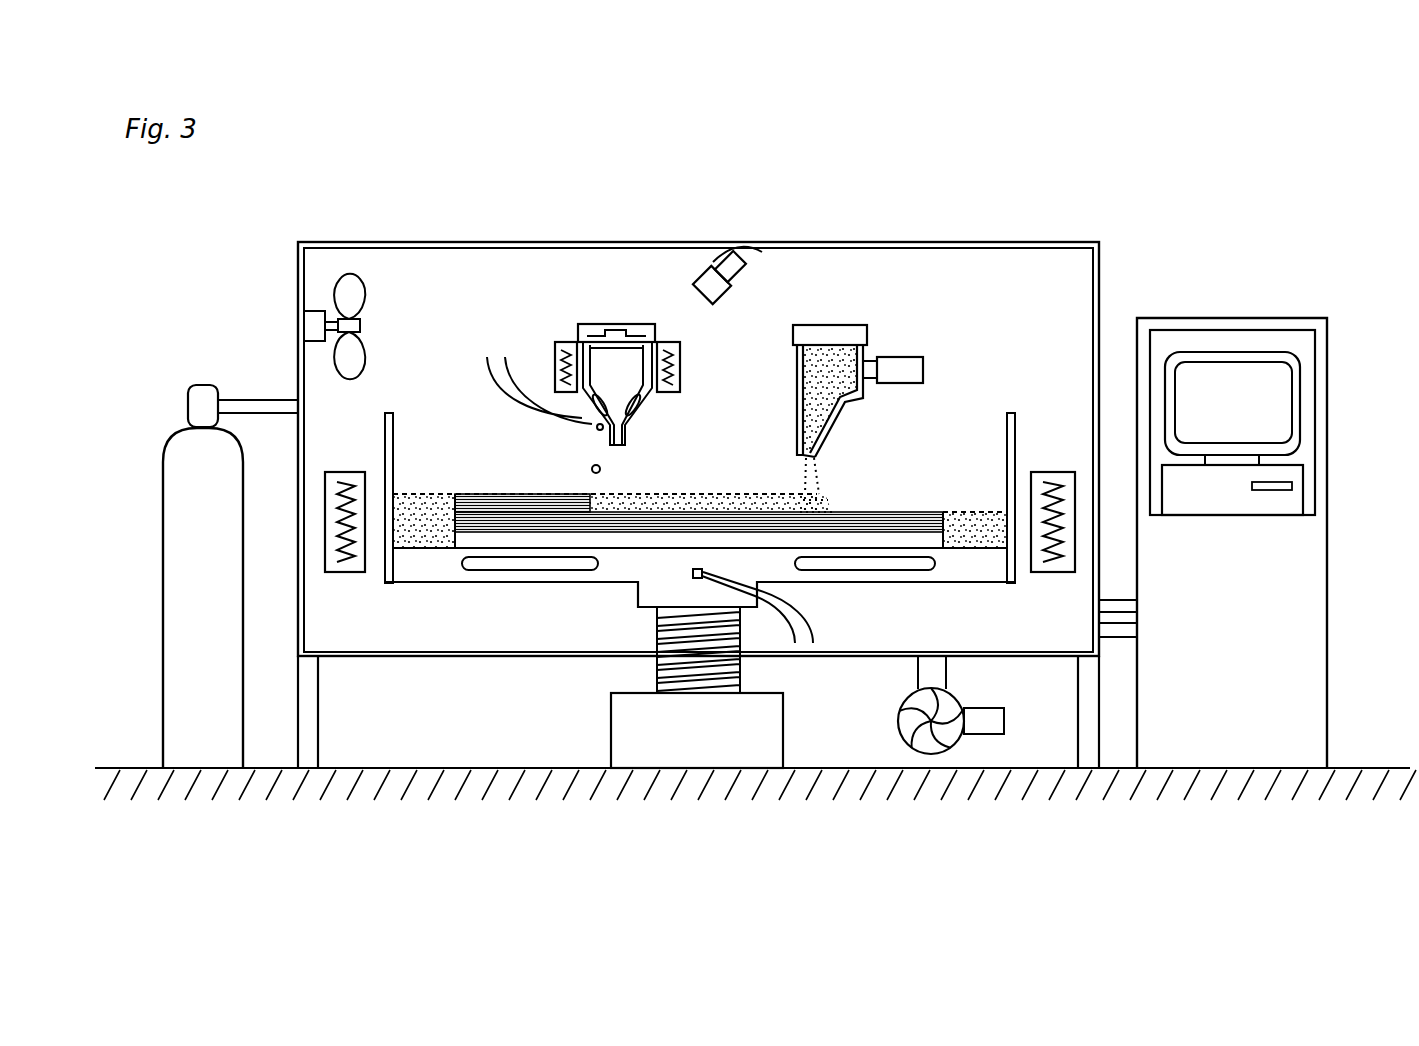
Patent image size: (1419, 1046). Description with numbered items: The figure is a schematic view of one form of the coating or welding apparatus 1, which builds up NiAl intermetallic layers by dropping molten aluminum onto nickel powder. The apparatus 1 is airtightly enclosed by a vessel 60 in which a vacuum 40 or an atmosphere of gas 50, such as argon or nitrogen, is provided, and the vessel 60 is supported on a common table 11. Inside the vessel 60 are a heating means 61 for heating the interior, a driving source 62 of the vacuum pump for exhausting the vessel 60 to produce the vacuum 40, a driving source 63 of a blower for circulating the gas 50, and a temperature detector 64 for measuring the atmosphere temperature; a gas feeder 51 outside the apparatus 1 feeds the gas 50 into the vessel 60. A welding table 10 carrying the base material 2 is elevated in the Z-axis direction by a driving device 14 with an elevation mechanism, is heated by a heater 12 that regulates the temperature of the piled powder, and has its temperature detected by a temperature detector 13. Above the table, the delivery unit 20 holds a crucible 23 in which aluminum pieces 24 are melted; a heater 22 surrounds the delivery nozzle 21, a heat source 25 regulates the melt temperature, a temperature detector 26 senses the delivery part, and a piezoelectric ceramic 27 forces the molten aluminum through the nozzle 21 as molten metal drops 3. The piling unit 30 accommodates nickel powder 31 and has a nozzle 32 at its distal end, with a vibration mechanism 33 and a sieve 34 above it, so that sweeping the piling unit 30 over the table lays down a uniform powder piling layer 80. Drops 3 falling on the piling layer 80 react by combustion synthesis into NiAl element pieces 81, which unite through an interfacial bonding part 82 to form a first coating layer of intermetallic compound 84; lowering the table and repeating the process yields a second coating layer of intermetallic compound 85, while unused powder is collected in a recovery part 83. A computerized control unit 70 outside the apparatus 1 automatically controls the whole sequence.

The coating or welding apparatus 1 is at (973, 243).
The base material 2 is at (876, 546).
The molten metal drops 3 is at (590, 468).
The welding table 10 is at (456, 568).
The common table 11 is at (298, 715).
The heater 12 is at (878, 565).
The temperature detector 13 is at (700, 582).
The driving device 14 is at (662, 745).
The delivery unit 20 is at (572, 328).
The delivery nozzle 21 is at (626, 432).
The high-frequency heater or resistance heater 22 is at (640, 408).
The crucible 23 is at (584, 326).
The aluminum pieces 24 is at (600, 336).
The heat source 25 is at (551, 363).
The temperature detector 26 is at (598, 428).
The piezoelectric ceramic 27 is at (618, 336).
The piling unit 30 is at (880, 330).
The nickel powder 31 is at (828, 365).
The nozzle 32 is at (797, 465).
The vibration mechanism 33 is at (902, 357).
The sieve 34 is at (832, 335).
The vacuum 40 is at (1036, 290).
The gas 50 is at (698, 450).
The gas feeder 51 is at (180, 605).
The vessel 60 is at (1103, 287).
The heating means 61 is at (325, 545).
The driving source of vacuum means 62 is at (950, 740).
The driving source of gas circulating means 63 is at (346, 278).
The temperature detector 64 is at (697, 268).
The computerized control unit 70 is at (1275, 318).
The powder piling layer 80 is at (672, 590).
The NiAl element pieces 81 is at (583, 505).
The interfacial bonding part 82 is at (674, 651).
The recovery part 83 is at (407, 535).
The first coating layer of intermetallic compound 84 is at (918, 550).
The second coating layer of intermetallic compound 85 is at (490, 502).